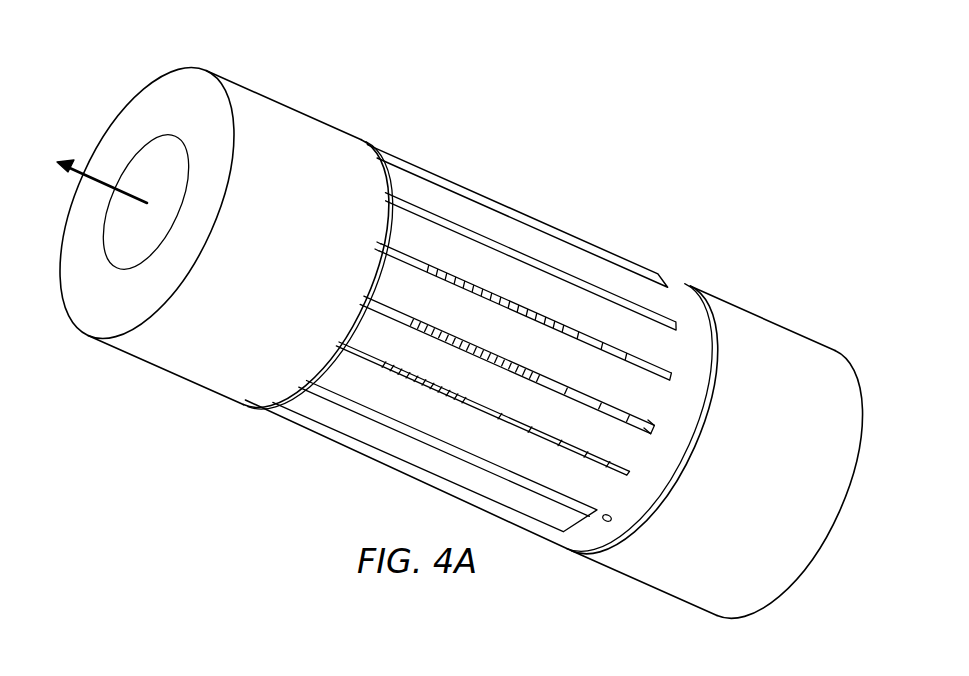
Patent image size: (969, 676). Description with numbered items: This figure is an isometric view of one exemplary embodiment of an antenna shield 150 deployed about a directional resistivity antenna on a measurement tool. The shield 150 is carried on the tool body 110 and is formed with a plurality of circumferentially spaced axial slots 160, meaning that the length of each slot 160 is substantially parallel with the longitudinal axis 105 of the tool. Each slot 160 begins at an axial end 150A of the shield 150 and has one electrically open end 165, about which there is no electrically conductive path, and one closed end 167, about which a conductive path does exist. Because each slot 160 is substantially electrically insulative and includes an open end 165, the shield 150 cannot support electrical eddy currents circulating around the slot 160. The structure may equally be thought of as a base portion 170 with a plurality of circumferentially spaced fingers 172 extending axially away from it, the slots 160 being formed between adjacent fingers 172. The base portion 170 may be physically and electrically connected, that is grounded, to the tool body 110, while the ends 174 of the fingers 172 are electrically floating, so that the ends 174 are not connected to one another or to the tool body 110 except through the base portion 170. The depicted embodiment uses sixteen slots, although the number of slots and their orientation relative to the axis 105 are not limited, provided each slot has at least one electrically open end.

The longitudinal axis 105 is at (100, 176).
The tool body 110 is at (293, 122).
The antenna shield 150 is at (577, 223).
The axial end of the shield 150A is at (376, 262).
The slot 160 is at (498, 361).
The electrically open end 165 is at (360, 293).
The closed end 167 is at (655, 427).
The base portion 170 is at (693, 362).
The fingers 172 is at (510, 273).
The ends of the fingers 174 is at (390, 224).